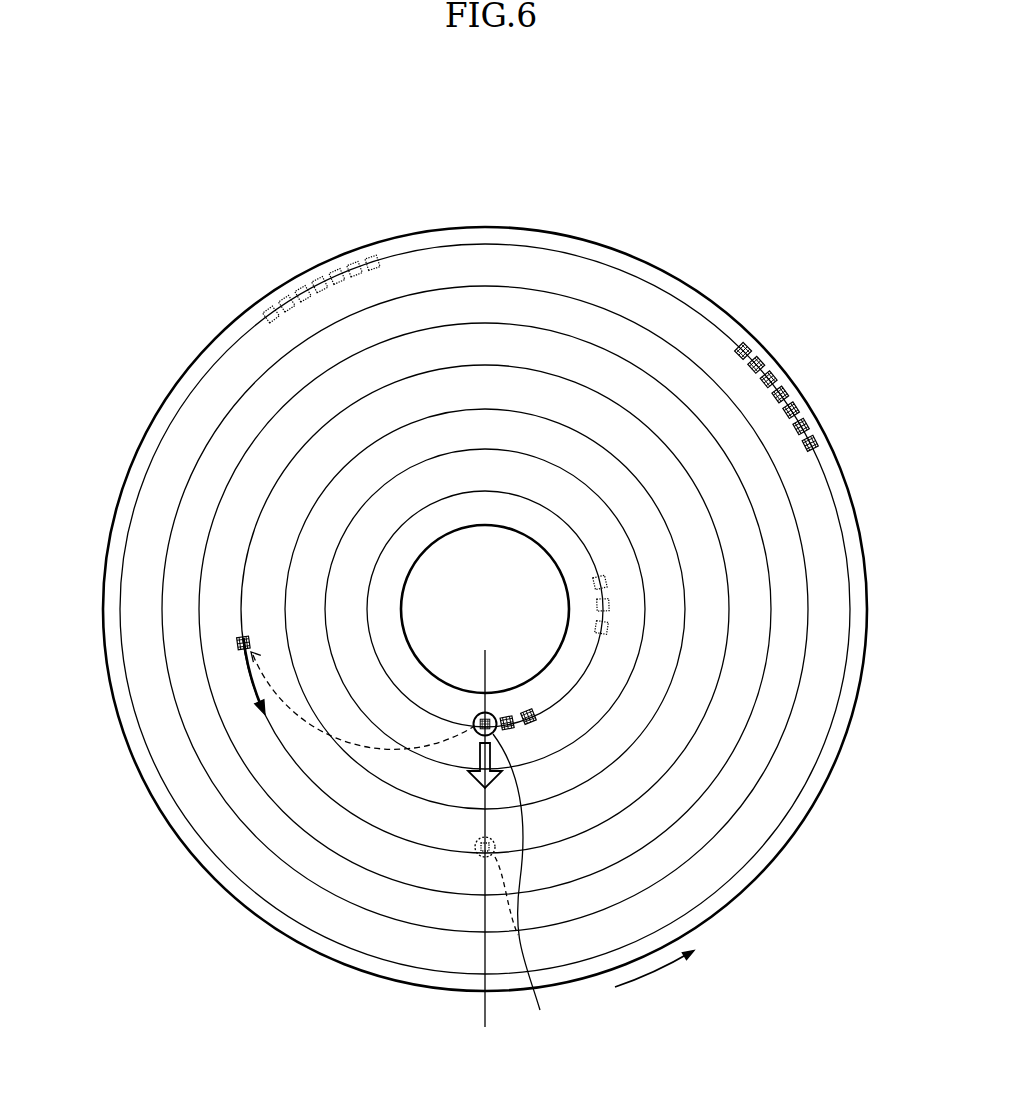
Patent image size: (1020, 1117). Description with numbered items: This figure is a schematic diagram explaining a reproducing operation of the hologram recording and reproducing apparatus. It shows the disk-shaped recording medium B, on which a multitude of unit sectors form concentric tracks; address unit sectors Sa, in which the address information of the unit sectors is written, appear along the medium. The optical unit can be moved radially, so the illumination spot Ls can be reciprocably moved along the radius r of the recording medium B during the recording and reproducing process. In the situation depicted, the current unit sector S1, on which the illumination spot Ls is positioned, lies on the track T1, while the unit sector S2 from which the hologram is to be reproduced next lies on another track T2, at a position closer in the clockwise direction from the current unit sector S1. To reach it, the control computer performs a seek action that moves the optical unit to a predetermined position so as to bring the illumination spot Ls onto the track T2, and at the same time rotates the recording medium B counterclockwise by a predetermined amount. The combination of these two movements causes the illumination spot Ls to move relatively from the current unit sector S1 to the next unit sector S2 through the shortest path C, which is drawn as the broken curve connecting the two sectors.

The recording medium B is at (657, 262).
The address unit sector Sa is at (810, 422).
The track T1 is at (366, 609).
The track T2 is at (283, 740).
The current unit sector S1 is at (494, 714).
The unit sector S2 is at (237, 644).
The shortest path C is at (344, 740).
The radius r is at (484, 1005).
The illumination spot Ls is at (527, 888).